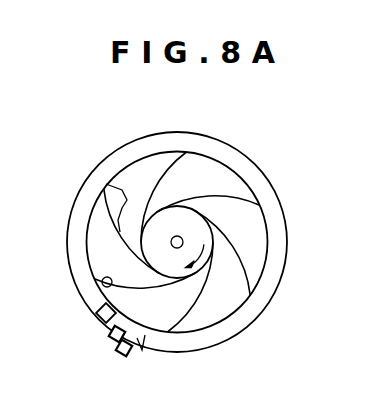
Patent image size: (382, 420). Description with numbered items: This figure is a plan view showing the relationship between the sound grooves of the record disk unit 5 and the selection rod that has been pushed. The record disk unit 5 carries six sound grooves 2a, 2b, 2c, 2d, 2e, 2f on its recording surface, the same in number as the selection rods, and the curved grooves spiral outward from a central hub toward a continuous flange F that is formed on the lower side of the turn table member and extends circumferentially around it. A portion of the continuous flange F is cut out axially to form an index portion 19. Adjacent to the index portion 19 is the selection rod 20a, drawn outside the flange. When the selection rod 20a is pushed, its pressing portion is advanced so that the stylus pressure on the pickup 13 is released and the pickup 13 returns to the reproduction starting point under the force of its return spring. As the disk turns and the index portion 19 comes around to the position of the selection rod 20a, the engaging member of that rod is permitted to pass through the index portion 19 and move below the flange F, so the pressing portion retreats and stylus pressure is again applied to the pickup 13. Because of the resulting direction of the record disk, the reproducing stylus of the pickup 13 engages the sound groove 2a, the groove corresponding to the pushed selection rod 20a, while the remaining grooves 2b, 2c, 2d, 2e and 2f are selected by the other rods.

The record disk unit 5 is at (177, 240).
The sound groove 2a is at (191, 320).
The sound groove 2b is at (126, 315).
The sound groove 2c is at (116, 192).
The sound groove 2d is at (178, 167).
The sound groove 2e is at (236, 187).
The sound groove 2f is at (259, 253).
The pickup 13 is at (61, 297).
The index portion 19 is at (145, 377).
The selection rod 20a is at (108, 373).
The continuous flange F is at (252, 345).